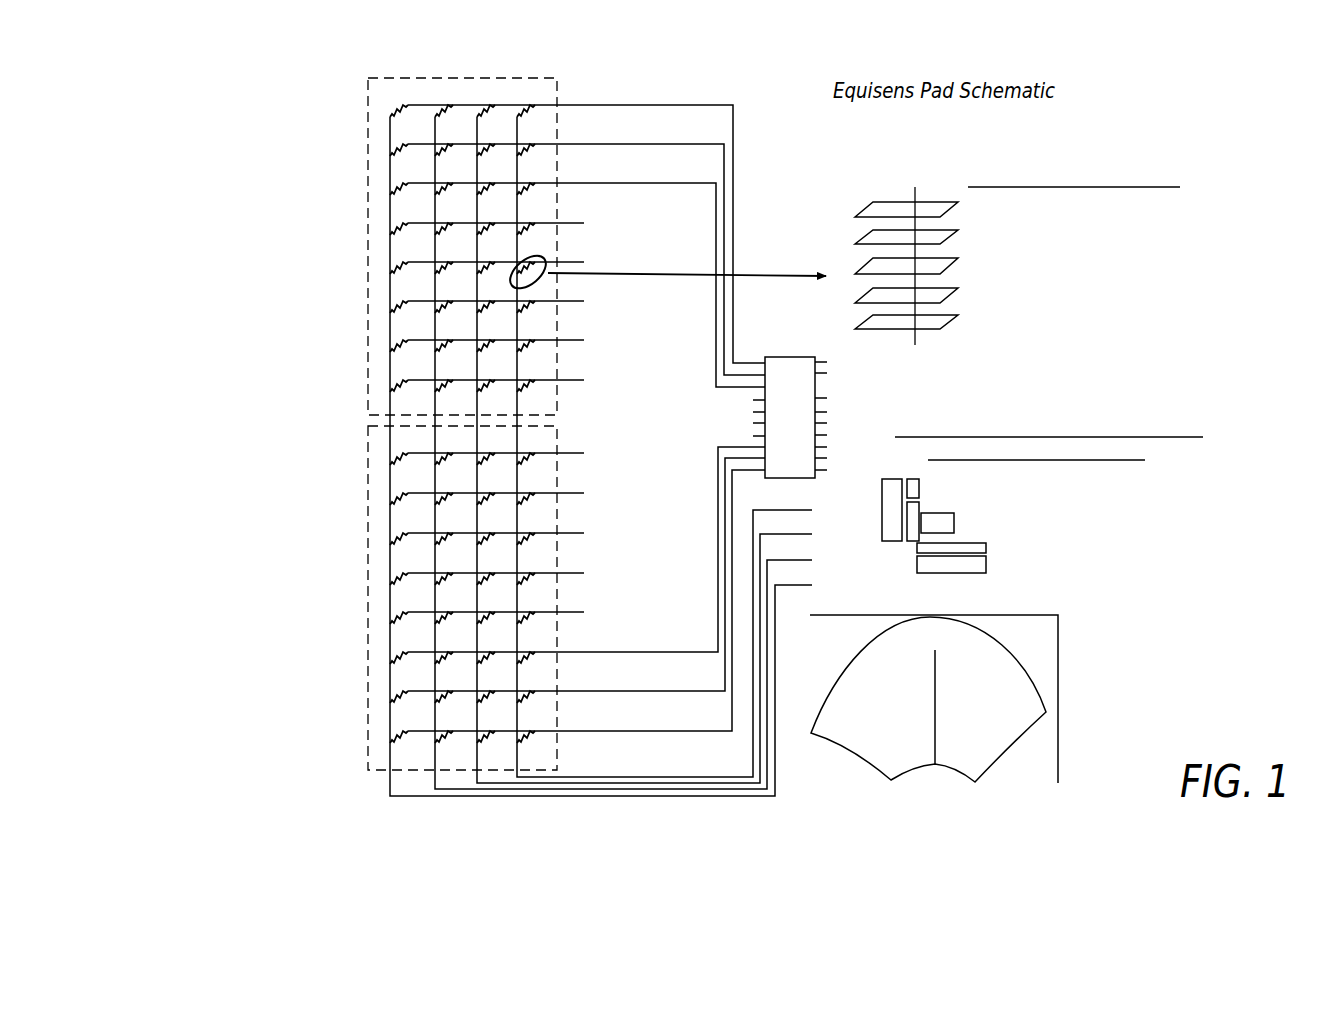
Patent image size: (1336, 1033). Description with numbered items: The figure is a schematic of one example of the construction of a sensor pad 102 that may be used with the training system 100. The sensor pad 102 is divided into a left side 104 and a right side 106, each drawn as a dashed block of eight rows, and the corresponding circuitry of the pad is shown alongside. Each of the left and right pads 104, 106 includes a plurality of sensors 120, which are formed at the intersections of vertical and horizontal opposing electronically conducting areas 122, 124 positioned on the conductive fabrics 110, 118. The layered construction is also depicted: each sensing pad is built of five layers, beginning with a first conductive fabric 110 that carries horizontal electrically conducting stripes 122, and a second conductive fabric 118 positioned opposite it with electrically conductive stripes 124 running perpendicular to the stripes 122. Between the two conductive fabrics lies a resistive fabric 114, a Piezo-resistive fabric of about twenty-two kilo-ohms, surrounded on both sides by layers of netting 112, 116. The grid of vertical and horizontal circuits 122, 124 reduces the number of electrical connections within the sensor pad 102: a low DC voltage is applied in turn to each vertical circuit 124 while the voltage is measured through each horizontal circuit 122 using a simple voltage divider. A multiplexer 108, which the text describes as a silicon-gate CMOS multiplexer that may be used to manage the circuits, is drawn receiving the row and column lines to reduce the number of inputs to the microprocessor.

The training system 100 is at (286, 123).
The sensor pad 102 is at (1033, 651).
The left side 104 is at (557, 104).
The right side 106 is at (555, 741).
The multiplexer 108 is at (748, 359).
The first conductive fabric 110 is at (873, 209).
The netting 112 is at (866, 240).
The resistive fabric 114 is at (872, 270).
The netting 116 is at (872, 290).
The second conductive fabric 118 is at (872, 318).
The sensors 120 is at (522, 148).
The horizontal electrically conducting stripes 122 is at (420, 455).
The vertical electrically conductive stripes 124 is at (477, 781).